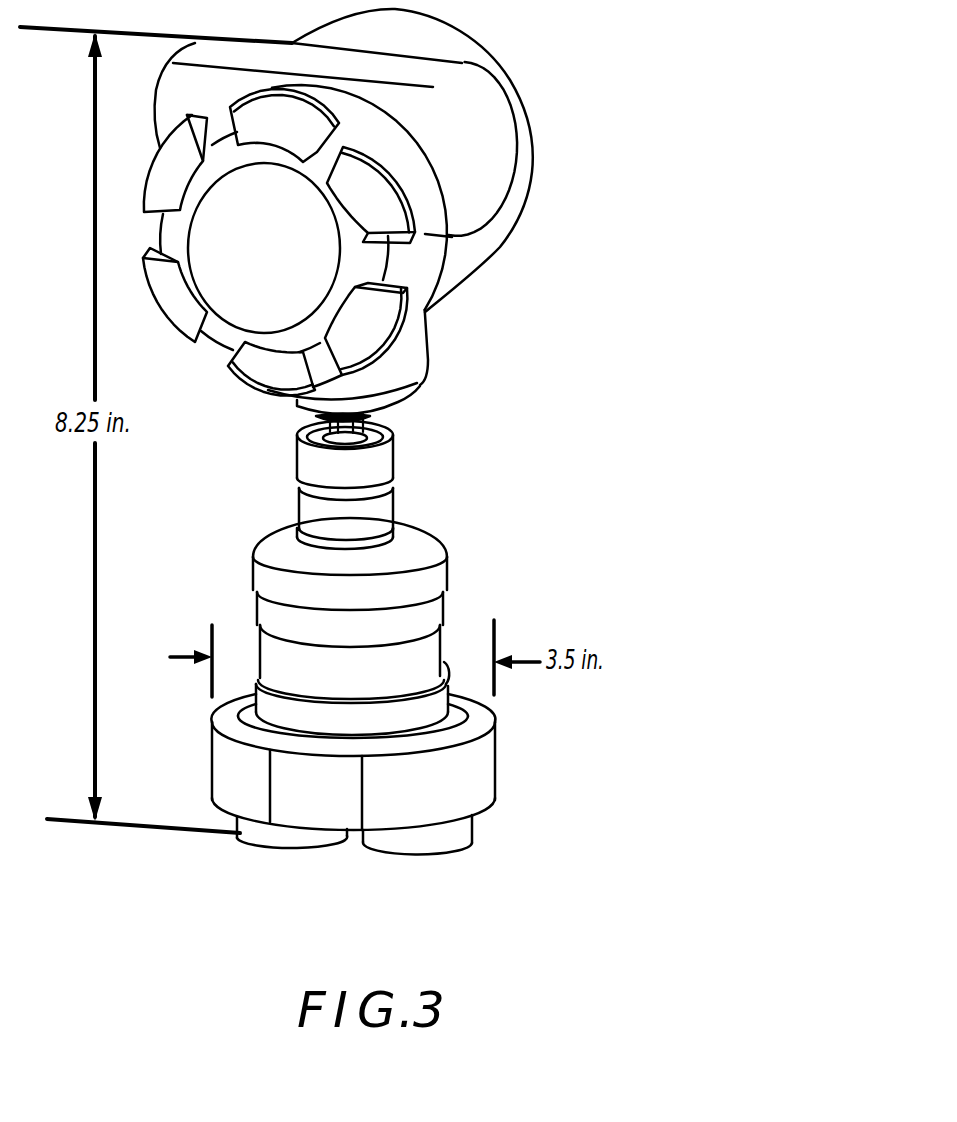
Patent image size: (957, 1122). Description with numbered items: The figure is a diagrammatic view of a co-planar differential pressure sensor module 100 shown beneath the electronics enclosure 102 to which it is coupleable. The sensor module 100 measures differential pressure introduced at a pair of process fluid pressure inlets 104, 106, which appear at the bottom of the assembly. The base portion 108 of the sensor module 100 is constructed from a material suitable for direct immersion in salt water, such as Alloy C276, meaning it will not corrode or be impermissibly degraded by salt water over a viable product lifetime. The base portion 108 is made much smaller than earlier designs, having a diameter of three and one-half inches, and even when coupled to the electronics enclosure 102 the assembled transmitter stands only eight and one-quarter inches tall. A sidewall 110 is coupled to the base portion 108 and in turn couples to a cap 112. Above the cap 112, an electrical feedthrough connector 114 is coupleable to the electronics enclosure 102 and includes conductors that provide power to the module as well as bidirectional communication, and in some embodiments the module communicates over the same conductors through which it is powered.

The co-planar differential pressure sensor module 100 is at (480, 544).
The electronics enclosure 102 is at (523, 112).
The process fluid pressure inlet 104 is at (260, 830).
The process fluid pressure inlet 106 is at (443, 840).
The base portion 108 is at (477, 775).
The sidewall 110 is at (442, 618).
The cap 112 is at (254, 566).
The electrical feedthrough connector 114 is at (378, 462).